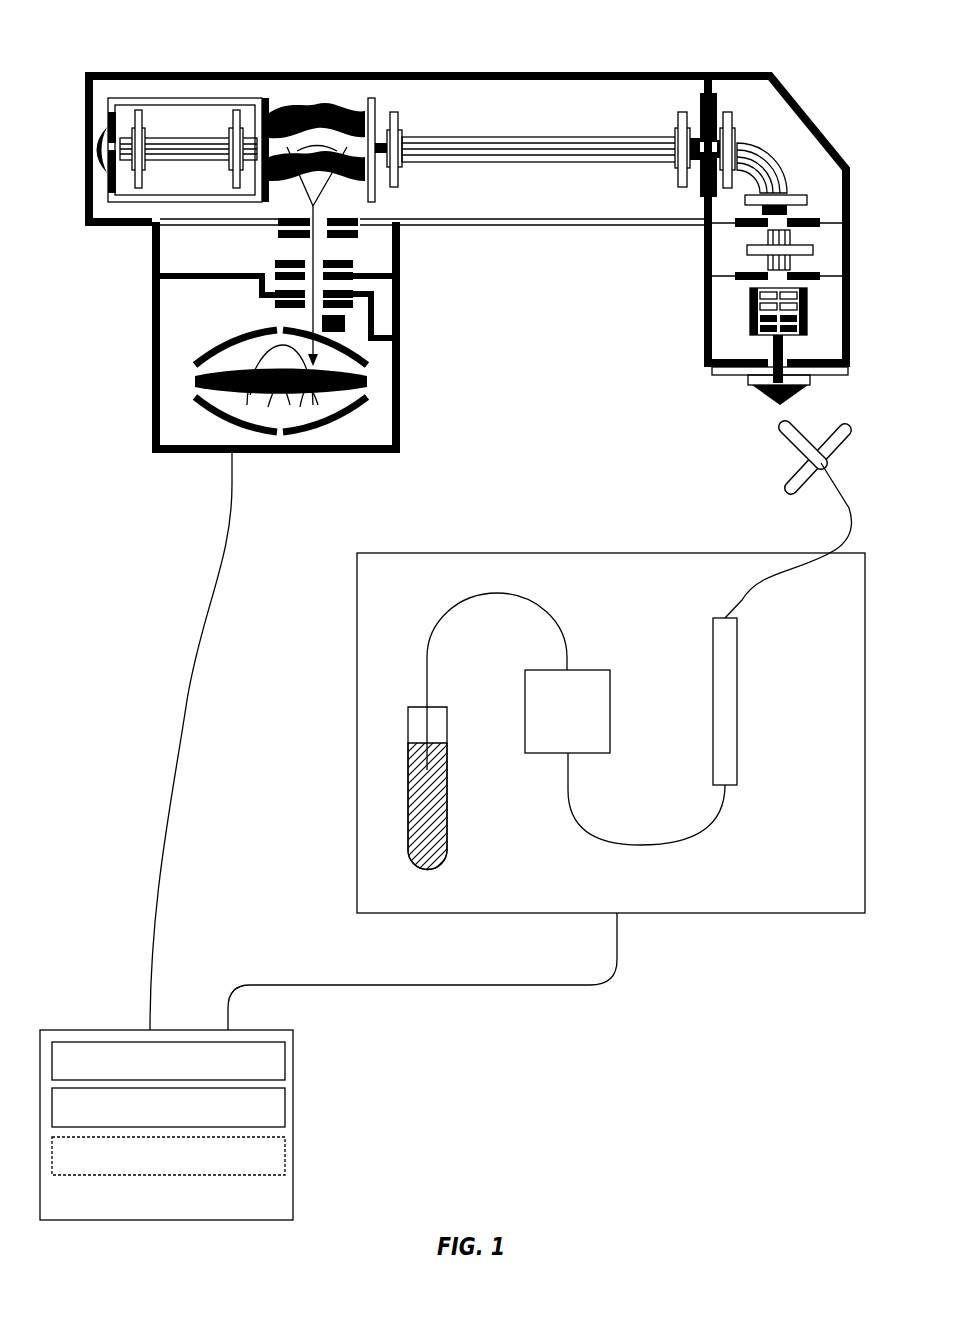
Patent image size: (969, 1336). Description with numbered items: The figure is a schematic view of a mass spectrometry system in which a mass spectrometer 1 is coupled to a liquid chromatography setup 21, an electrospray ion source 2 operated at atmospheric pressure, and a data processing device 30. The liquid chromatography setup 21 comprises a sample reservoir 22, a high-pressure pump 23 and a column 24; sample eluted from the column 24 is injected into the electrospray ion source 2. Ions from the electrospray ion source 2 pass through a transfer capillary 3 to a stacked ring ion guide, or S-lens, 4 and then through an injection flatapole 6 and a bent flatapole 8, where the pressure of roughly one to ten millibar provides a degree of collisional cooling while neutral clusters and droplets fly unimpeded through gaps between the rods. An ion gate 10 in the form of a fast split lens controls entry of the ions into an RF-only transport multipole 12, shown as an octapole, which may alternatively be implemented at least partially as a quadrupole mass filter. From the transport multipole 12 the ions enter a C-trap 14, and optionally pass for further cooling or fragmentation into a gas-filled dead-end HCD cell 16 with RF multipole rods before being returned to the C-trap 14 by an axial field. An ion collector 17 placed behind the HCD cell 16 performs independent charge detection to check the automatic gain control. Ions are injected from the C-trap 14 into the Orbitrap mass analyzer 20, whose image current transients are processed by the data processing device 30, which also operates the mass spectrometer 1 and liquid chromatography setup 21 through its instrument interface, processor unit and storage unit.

The mass spectrometer 1 is at (458, 45).
The electrospray ion source 2 is at (766, 461).
The transfer capillary 3 is at (772, 343).
The stacked ring ion guide (S-lens) 4 is at (750, 315).
The injection flatapole 6 is at (750, 260).
The bent flatapole 8 is at (766, 148).
The ion gate 10 is at (708, 92).
The transport multipole 12 is at (527, 137).
The C-trap 14 is at (300, 106).
The HCD cell 16 is at (182, 97).
The ion collector 17 is at (103, 131).
The Orbitrap mass analyzer 20 is at (372, 382).
The liquid chromatography setup 21 is at (742, 915).
The sample reservoir 22 is at (450, 807).
The high-pressure pump 23 is at (612, 711).
The column 24 is at (740, 701).
The data processing device 30 is at (297, 1123).